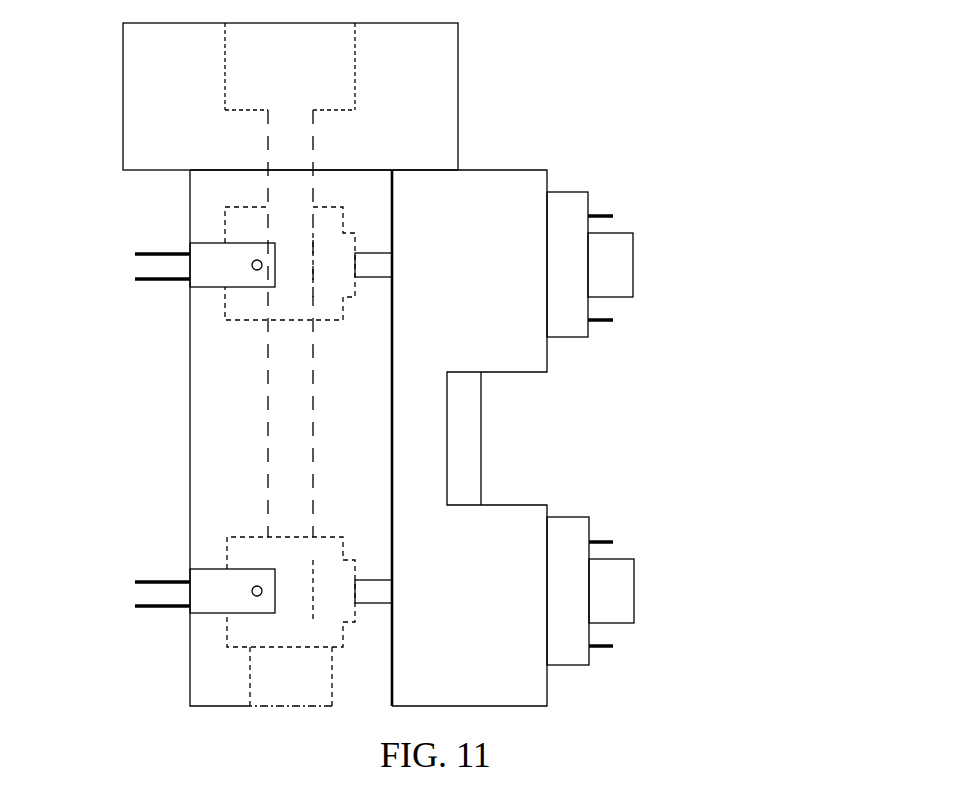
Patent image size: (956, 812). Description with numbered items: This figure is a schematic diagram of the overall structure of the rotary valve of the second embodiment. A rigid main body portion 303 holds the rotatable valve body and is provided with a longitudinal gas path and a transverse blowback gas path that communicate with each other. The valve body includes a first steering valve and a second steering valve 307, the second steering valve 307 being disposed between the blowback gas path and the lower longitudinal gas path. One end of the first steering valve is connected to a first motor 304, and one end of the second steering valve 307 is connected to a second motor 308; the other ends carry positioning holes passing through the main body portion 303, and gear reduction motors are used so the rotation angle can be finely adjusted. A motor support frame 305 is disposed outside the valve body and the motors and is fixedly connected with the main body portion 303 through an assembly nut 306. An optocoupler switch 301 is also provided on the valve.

The optocoupler switch 301 is at (167, 283).
The main body portion 303 is at (376, 93).
The first motor 304 is at (678, 252).
The motor support frame 305 is at (417, 397).
The assembly nut 306 is at (534, 438).
The second steering valve 307 is at (173, 610).
The second motor 308 is at (677, 582).